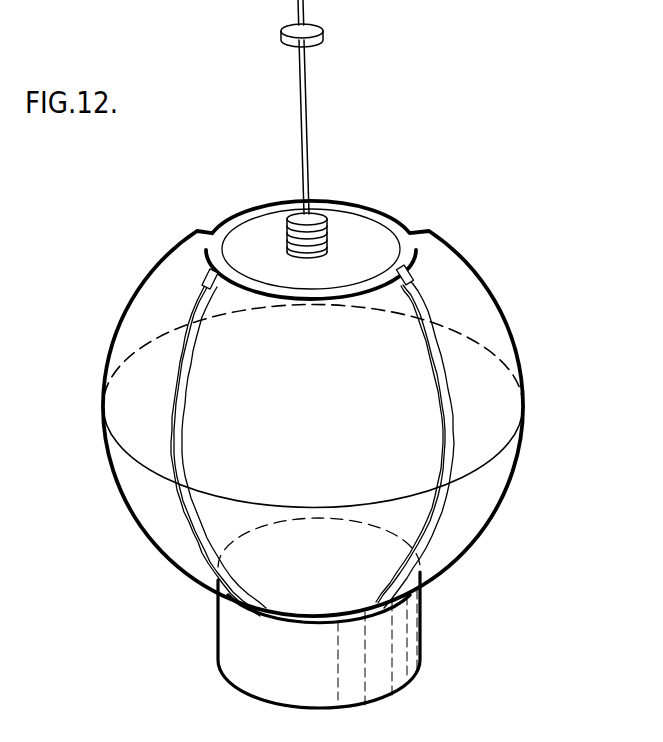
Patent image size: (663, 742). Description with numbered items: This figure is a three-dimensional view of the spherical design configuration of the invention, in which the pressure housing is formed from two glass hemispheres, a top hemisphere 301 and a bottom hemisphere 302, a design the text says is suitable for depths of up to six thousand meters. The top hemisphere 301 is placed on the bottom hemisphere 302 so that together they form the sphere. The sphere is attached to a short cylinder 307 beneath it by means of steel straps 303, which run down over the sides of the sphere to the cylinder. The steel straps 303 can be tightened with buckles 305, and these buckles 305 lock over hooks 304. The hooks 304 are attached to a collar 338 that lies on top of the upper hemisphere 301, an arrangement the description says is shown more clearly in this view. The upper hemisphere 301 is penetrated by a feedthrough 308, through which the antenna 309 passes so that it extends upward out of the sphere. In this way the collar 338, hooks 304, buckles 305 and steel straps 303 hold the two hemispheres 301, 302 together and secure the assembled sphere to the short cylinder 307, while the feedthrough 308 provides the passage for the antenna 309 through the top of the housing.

The top hemisphere 301 is at (513, 338).
The bottom hemisphere 302 is at (181, 528).
The steel straps 303 is at (181, 366).
The hooks 304 is at (215, 262).
The buckles 305 is at (207, 278).
The short cylinder 307 is at (410, 628).
The feedthrough 308 is at (283, 247).
The antenna 309 is at (298, 103).
The collar 338 is at (343, 289).